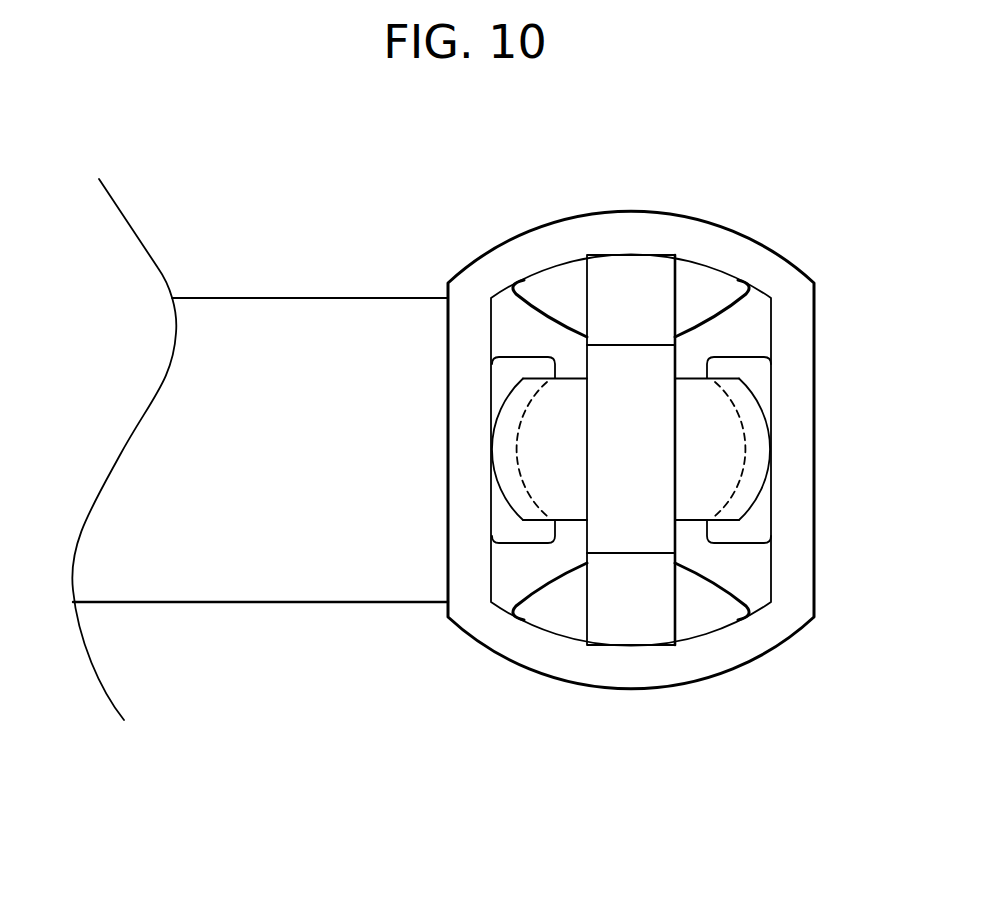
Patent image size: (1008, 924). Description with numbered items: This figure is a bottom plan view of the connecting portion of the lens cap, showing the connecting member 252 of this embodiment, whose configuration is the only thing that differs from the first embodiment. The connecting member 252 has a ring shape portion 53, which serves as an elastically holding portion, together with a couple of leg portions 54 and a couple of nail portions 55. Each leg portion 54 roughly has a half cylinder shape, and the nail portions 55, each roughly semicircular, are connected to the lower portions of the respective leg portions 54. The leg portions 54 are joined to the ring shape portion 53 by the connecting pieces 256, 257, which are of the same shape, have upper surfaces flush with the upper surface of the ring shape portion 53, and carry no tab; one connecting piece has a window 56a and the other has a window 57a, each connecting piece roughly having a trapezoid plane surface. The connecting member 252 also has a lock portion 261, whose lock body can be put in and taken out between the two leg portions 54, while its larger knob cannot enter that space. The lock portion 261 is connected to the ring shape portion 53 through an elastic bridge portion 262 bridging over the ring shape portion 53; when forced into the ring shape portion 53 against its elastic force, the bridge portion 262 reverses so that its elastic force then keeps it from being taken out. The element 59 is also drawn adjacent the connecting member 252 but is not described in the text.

The connecting member 252 is at (633, 189).
The ring shape portion 53 is at (715, 245).
The leg portion 54 is at (577, 395).
The nail portion 55 is at (503, 425).
The window 56a is at (534, 543).
The window 57a is at (731, 543).
The shaft 59 is at (218, 316).
The connecting piece 256 is at (545, 567).
The connecting piece 257 is at (720, 570).
The lock portion 261 is at (630, 353).
The bridge portion 262 is at (598, 301).